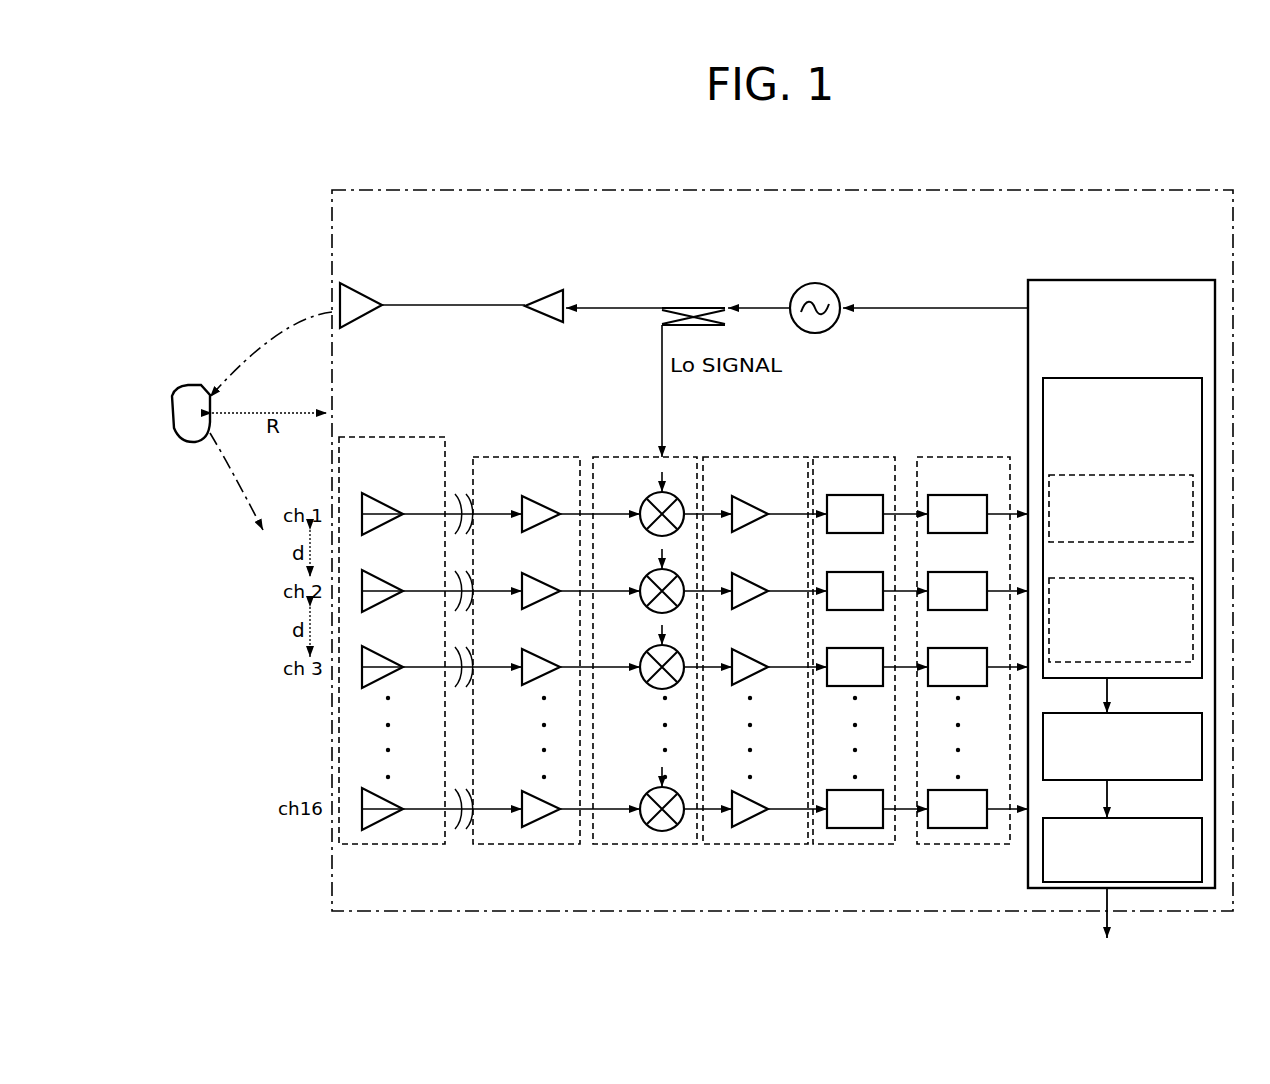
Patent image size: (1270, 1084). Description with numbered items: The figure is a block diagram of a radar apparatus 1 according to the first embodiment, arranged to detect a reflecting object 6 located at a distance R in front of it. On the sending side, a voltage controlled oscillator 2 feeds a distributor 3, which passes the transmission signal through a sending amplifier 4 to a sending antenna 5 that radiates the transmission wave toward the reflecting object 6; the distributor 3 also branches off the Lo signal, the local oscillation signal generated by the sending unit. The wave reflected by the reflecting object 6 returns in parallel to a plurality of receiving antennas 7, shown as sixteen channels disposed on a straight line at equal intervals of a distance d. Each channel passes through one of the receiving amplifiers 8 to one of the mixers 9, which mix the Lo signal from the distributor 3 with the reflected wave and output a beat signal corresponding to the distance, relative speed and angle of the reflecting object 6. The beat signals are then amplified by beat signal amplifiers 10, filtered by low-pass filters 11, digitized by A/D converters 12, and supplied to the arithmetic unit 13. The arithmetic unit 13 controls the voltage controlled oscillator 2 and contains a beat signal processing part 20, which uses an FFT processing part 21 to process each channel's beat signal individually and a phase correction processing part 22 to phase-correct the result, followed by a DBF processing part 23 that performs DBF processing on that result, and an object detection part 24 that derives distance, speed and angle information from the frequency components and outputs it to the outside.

The radar apparatus 1 is at (765, 190).
The voltage controlled oscillator 2 is at (826, 282).
The distributor 3 is at (692, 302).
The sending amplifier 4 is at (562, 283).
The sending antenna 5 is at (352, 283).
The reflecting object 6 is at (193, 385).
The receiving antennas 7 is at (363, 434).
The receiving amplifiers 8 is at (545, 456).
The mixers 9 is at (688, 456).
The beat signal amplifiers 10 is at (760, 456).
The low-pass filters 11 is at (860, 457).
The A/D converters 12 is at (944, 457).
The arithmetic unit 13 is at (1106, 280).
The beat signal processing part 20 is at (1118, 378).
The FFT processing part 21 is at (1118, 475).
The phase correction processing part 22 is at (1118, 579).
The DBF processing part 23 is at (1122, 714).
The object detection part 24 is at (1130, 819).